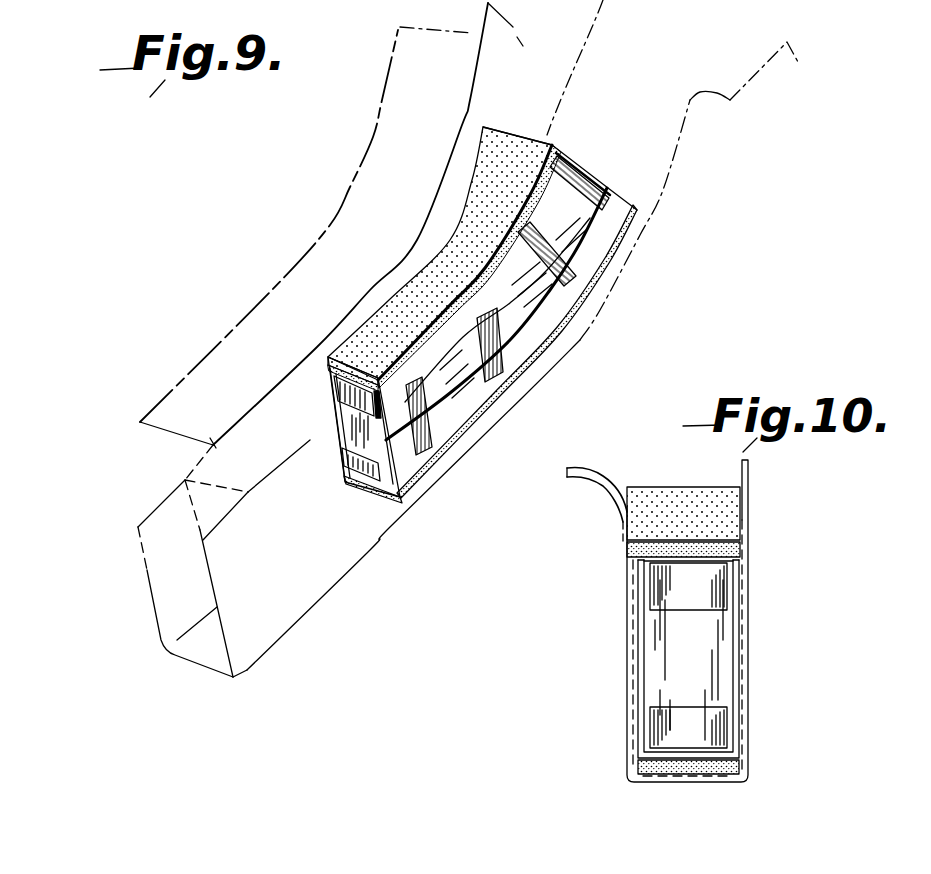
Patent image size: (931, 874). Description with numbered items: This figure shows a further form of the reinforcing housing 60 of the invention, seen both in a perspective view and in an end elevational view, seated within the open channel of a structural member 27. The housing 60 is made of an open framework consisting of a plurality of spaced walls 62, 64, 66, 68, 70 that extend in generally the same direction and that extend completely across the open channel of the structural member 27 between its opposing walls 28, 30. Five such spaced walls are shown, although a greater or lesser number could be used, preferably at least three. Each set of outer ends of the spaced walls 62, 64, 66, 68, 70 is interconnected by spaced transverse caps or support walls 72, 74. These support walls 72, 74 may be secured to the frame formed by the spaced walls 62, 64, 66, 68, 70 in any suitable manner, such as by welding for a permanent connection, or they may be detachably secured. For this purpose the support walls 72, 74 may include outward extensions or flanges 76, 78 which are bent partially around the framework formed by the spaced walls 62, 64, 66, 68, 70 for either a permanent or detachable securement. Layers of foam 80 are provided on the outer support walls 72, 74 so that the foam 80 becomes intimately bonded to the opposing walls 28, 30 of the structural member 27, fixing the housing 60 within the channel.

In FIG. 9, the structural member 27 is at (722, 60).
In FIG. 10, the structural member 27 is at (623, 648).
In FIG. 9, the opposing wall 28 is at (177, 577).
In FIG. 9, the opposing wall 30 is at (277, 595).
In FIG. 9, the housing 60 is at (620, 163).
In FIG. 9, the spaced wall 62 is at (610, 187).
In FIG. 9, the spaced wall 64 is at (547, 283).
In FIG. 9, the spaced wall 66 is at (487, 367).
In FIG. 9, the spaced wall 68 is at (433, 413).
In FIG. 9, the spaced wall 70 is at (344, 418).
In FIG. 10, the spaced wall 70 is at (693, 680).
In FIG. 9, the support wall 72 is at (557, 177).
In FIG. 10, the support wall 72 is at (690, 563).
In FIG. 9, the support wall 74 is at (563, 227).
In FIG. 10, the support wall 74 is at (688, 753).
In FIG. 9, the flange 76 is at (330, 383).
In FIG. 9, the flange 78 is at (405, 463).
In FIG. 9, the layer of foam 80 is at (503, 157).
In FIG. 10, the layer of foam 80 is at (663, 503).